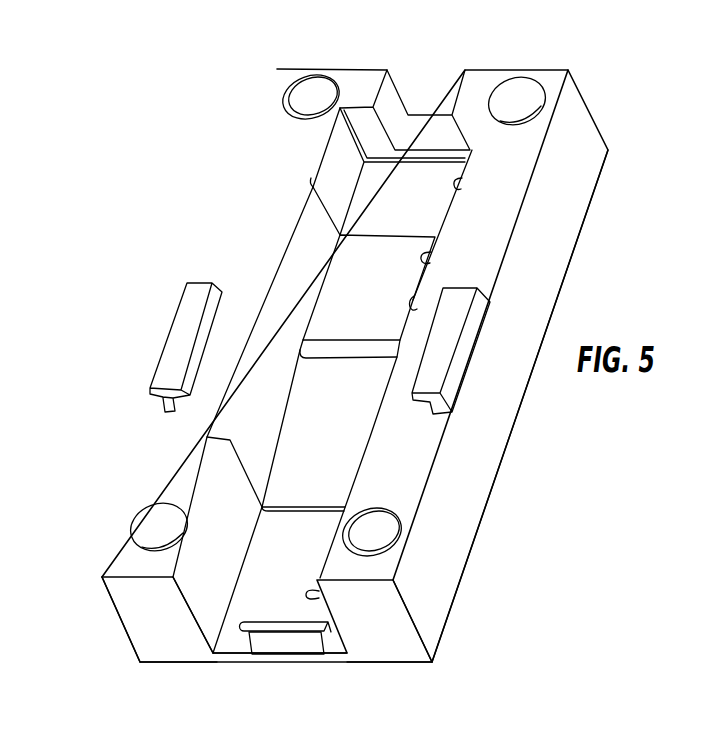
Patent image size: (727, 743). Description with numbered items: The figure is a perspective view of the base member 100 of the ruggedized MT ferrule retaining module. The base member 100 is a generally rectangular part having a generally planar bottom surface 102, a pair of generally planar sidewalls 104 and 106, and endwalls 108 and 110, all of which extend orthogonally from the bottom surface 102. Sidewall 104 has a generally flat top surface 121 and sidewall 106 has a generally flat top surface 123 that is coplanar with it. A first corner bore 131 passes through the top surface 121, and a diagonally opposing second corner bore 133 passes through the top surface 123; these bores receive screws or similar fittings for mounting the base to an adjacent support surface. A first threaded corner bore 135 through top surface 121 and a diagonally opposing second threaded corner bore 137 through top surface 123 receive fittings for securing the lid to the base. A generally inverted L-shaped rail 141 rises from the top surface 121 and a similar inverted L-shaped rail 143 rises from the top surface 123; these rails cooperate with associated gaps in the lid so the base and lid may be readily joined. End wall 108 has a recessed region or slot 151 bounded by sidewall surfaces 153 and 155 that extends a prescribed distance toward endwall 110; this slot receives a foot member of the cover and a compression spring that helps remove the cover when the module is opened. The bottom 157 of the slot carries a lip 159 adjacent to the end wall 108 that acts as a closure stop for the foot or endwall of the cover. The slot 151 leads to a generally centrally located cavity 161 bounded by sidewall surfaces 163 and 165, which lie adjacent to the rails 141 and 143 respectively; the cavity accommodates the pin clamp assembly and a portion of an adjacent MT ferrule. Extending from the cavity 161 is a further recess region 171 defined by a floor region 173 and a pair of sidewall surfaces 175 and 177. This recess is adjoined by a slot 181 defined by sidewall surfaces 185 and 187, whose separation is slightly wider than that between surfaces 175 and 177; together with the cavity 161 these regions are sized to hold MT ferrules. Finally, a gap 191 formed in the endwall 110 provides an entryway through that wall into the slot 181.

The base member 100 is at (527, 405).
The bottom surface 102 is at (405, 663).
The sidewall 104 is at (120, 600).
The sidewall 106 is at (462, 538).
The endwall 108 is at (140, 642).
The endwall 110 is at (592, 113).
The top surface 121 is at (148, 475).
The top surface 123 is at (430, 445).
The first corner bore 131 is at (143, 527).
The second corner bore 133 is at (525, 97).
The first threaded corner bore 135 is at (311, 95).
The second threaded corner bore 137 is at (377, 533).
The inverted L-shaped rail 141 is at (183, 322).
The inverted L-shaped rail 143 is at (450, 338).
The recessed region or slot 151 is at (217, 657).
The sidewall surface 153 is at (215, 568).
The sidewall surface 155 is at (312, 597).
The bottom of the slot 157 is at (323, 643).
The lip 159 is at (277, 641).
The cavity 161 is at (294, 455).
The sidewall surface 163 is at (248, 363).
The sidewall surface 165 is at (390, 421).
The recess region 171 is at (320, 247).
The floor region 173 is at (353, 303).
The sidewall surface 175 is at (300, 272).
The sidewall surface 177 is at (422, 258).
The slot 181 is at (413, 223).
The sidewall surface 185 is at (340, 172).
The sidewall surface 187 is at (458, 185).
The gap 191 is at (423, 88).